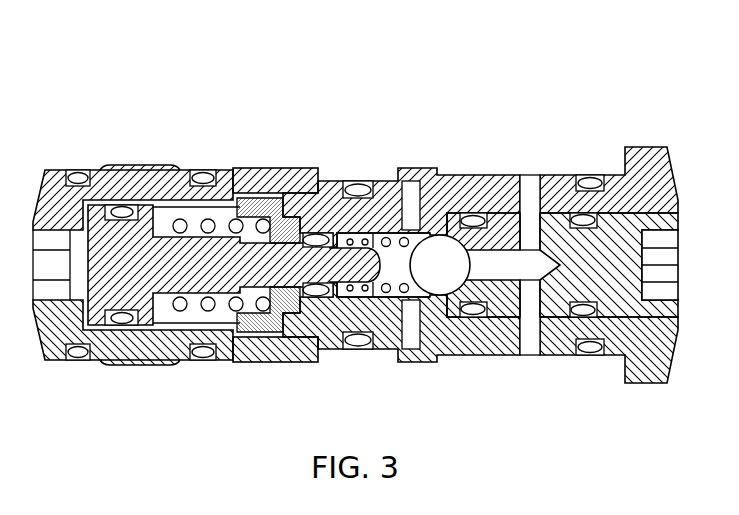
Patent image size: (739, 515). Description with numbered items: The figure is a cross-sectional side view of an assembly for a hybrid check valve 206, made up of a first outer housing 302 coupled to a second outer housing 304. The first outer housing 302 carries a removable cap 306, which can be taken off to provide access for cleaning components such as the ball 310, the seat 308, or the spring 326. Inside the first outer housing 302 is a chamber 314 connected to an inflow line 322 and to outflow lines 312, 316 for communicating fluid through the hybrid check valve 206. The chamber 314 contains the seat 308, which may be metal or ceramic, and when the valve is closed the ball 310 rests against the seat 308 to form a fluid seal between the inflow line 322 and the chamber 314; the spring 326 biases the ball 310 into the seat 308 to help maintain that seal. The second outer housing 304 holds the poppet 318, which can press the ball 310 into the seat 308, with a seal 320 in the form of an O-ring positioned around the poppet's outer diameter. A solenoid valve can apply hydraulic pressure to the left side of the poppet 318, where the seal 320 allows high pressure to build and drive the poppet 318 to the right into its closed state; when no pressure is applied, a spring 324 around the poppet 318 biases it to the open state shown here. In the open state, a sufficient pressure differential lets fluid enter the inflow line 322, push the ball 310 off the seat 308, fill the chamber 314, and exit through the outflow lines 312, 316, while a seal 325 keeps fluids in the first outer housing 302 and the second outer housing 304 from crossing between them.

The hybrid check valve 206 is at (638, 88).
The first outer housing 302 is at (663, 364).
The second outer housing 304 is at (138, 356).
The cap 306 is at (673, 312).
The seat 308 is at (493, 348).
The ball 310 is at (440, 247).
The outflow line 312 is at (412, 340).
The chamber 314 is at (392, 248).
The outflow line 316 is at (412, 200).
The poppet 318 is at (128, 238).
The seal 320 is at (127, 324).
The inflow line 322 is at (533, 348).
The spring 324 is at (182, 222).
The seal 325 is at (315, 294).
The spring 326 is at (367, 338).